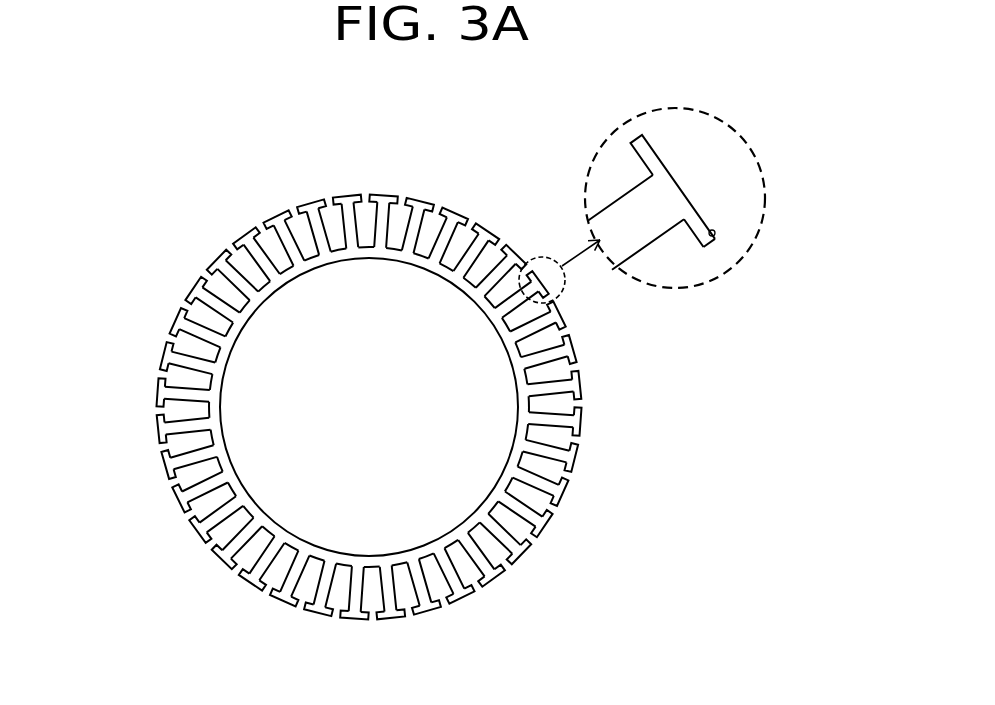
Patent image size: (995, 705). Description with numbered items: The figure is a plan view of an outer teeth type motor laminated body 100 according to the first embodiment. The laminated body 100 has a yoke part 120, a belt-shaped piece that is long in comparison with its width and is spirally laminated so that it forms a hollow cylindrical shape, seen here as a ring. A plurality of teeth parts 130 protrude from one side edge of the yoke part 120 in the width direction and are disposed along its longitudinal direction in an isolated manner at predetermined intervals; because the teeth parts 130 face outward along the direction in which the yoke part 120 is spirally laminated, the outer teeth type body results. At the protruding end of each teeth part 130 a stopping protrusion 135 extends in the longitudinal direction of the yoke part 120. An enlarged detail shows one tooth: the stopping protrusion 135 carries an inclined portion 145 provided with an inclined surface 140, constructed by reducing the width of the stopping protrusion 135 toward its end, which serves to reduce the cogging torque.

The laminated body 100 is at (140, 322).
The yoke part 120 is at (368, 243).
The teeth part 130 is at (350, 215).
The stopping protrusion 135 is at (423, 200).
The inclined surface 140 is at (712, 243).
The inclined portion 145 is at (718, 234).